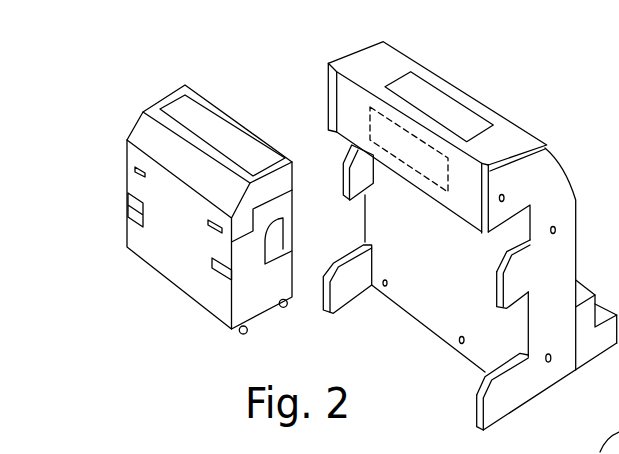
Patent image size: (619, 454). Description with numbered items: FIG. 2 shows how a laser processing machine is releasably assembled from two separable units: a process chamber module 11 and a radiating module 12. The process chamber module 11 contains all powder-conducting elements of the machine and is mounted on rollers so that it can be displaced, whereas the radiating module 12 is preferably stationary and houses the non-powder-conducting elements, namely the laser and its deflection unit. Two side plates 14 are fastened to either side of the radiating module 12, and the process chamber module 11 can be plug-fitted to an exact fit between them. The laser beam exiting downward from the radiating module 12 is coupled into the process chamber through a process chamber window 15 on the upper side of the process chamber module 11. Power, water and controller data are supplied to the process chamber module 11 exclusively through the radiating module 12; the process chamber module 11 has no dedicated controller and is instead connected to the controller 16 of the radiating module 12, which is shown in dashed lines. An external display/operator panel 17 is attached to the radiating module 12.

The process chamber module 11 is at (106, 127).
The radiating module 12 is at (479, 85).
The side plates 14 is at (353, 53).
The process chamber window 15 is at (183, 110).
The controller 16 is at (370, 117).
The external display/operator panel 17 is at (423, 92).